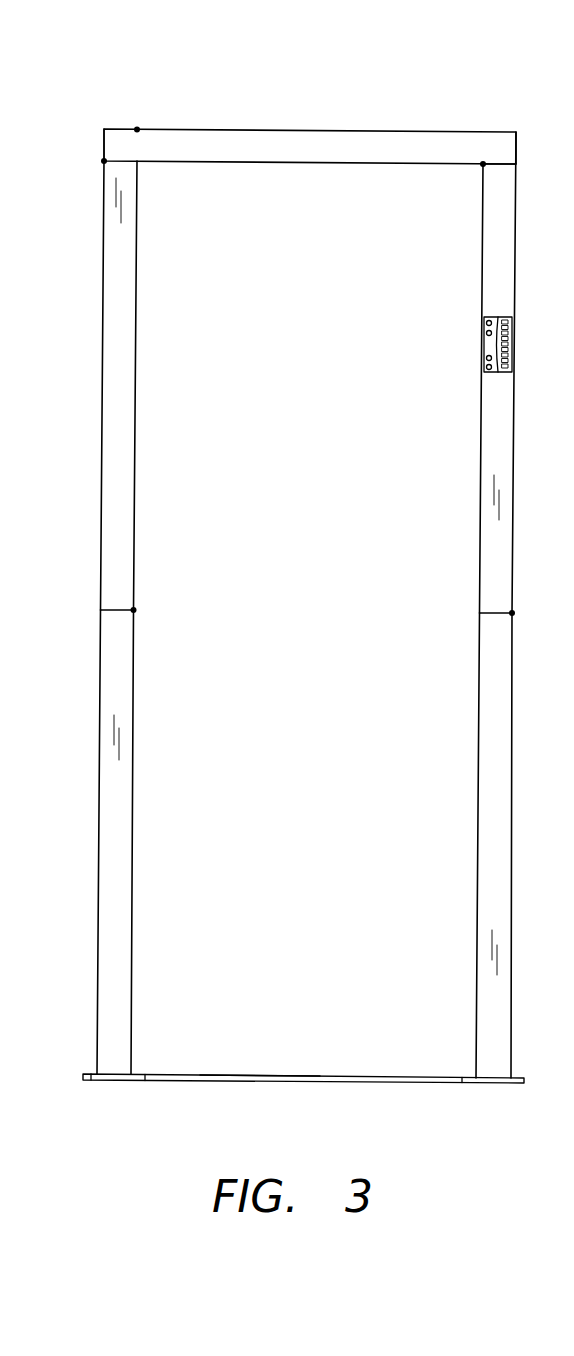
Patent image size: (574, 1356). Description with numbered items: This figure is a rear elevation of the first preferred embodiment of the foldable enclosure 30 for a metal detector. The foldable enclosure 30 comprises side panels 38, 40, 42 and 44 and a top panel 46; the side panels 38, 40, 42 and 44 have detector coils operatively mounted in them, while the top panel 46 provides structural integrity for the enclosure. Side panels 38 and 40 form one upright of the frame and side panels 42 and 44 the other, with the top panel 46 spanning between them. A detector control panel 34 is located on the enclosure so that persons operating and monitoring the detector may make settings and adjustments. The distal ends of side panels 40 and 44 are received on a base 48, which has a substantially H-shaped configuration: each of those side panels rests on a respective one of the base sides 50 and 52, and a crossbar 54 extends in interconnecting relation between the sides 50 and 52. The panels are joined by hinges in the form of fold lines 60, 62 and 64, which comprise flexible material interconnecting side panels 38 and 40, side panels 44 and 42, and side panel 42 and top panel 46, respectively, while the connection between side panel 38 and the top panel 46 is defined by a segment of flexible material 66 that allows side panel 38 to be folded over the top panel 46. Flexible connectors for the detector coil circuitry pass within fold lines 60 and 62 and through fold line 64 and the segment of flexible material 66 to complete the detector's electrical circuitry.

The foldable enclosure 30 is at (225, 43).
The detector control panel 34 is at (488, 346).
The side panel 38 is at (102, 258).
The side panel 40 is at (100, 699).
The side panel 42 is at (482, 223).
The side panel 44 is at (478, 740).
The top panel 46 is at (290, 129).
The base 48 is at (297, 1113).
The base side 50 is at (92, 1078).
The base side 52 is at (484, 1084).
The crossbar 54 is at (248, 1076).
The fold line 60 is at (139, 609).
The fold line 62 is at (516, 613).
The fold line 64 is at (483, 164).
The segment of flexible material 66 is at (103, 141).